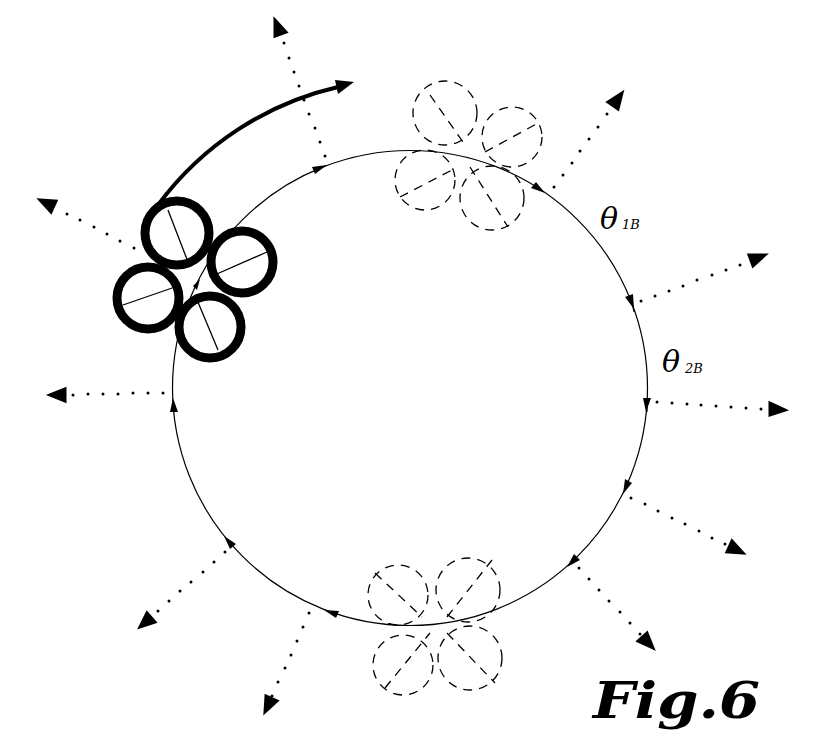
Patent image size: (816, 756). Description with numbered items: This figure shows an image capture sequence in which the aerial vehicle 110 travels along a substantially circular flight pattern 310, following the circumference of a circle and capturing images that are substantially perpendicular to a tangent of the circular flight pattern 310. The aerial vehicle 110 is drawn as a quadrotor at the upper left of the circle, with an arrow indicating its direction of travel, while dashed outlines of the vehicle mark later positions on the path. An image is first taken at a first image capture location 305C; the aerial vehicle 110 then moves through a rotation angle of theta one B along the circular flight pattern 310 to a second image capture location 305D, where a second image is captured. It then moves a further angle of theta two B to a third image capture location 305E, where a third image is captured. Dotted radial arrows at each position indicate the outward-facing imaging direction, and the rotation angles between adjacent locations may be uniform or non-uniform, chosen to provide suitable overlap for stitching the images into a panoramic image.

The aerial vehicle 110 is at (152, 172).
The first image capture location 305C is at (528, 206).
The second image capture location 305D is at (632, 308).
The third image capture location 305E is at (646, 410).
The circular flight pattern 310 is at (182, 467).